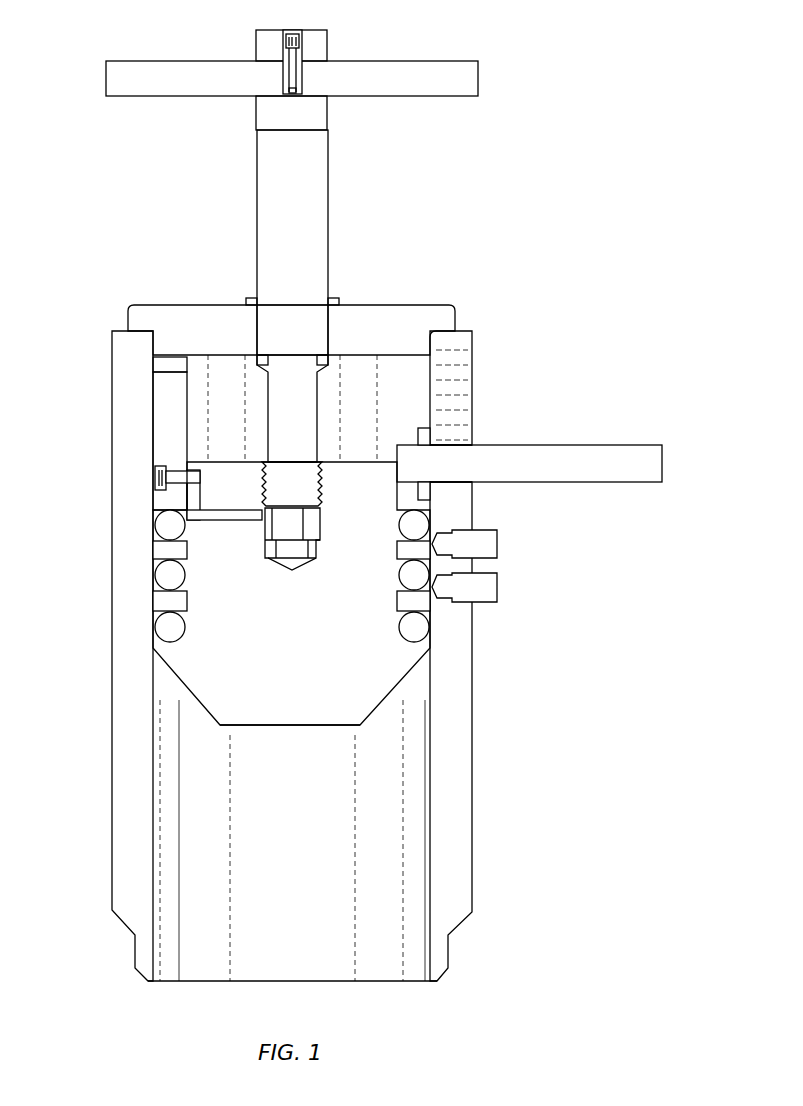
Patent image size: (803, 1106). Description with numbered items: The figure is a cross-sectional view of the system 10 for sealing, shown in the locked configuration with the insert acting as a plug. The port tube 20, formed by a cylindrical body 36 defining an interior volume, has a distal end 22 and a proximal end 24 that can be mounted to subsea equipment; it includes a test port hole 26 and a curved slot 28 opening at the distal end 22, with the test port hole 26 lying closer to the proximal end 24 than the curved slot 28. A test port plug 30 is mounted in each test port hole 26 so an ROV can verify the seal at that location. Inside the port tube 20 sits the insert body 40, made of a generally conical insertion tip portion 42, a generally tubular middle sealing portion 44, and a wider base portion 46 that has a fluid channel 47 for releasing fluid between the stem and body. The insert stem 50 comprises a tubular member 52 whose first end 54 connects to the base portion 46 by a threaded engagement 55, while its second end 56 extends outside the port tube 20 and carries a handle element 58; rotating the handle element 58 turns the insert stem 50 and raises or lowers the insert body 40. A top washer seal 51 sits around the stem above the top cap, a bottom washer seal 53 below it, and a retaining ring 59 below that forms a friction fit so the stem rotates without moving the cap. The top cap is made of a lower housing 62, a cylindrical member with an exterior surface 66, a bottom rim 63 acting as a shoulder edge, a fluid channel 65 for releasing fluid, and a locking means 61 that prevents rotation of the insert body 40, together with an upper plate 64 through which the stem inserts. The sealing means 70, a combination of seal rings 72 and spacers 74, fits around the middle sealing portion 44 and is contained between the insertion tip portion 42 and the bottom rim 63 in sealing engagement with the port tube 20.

The system 10 is at (462, 162).
The port tube 20 is at (487, 653).
The distal end 22 is at (248, 310).
The proximal end 24 is at (297, 653).
The test port hole 26 is at (450, 595).
The curved slot 28 is at (462, 445).
The test port plug 30 is at (505, 589).
The cylindrical body 36 is at (487, 653).
The insert body 40 is at (175, 680).
The insertion tip portion 42 is at (280, 725).
The middle sealing portion 44 is at (248, 620).
The base portion 46 is at (341, 507).
The fluid channel 47 is at (210, 515).
The insert stem 50 is at (300, 317).
The top washer seal 51 is at (335, 303).
The tubular member 52 is at (272, 160).
The bottom washer seal 53 is at (322, 367).
The first end 54 is at (285, 565).
The threaded engagement 55 is at (262, 478).
The second end 56 is at (318, 30).
The handle element 58 is at (115, 62).
The retaining ring 59 is at (262, 367).
The locking means 61 is at (156, 470).
The lower housing 62 is at (165, 425).
The bottom rim 63 is at (432, 492).
The upper plate 64 is at (200, 315).
The fluid channel 65 is at (160, 367).
The exterior surface 66 is at (445, 375).
The sealing means 70 is at (430, 640).
The seal rings 72 is at (295, 609).
The spacers 74 is at (165, 550).